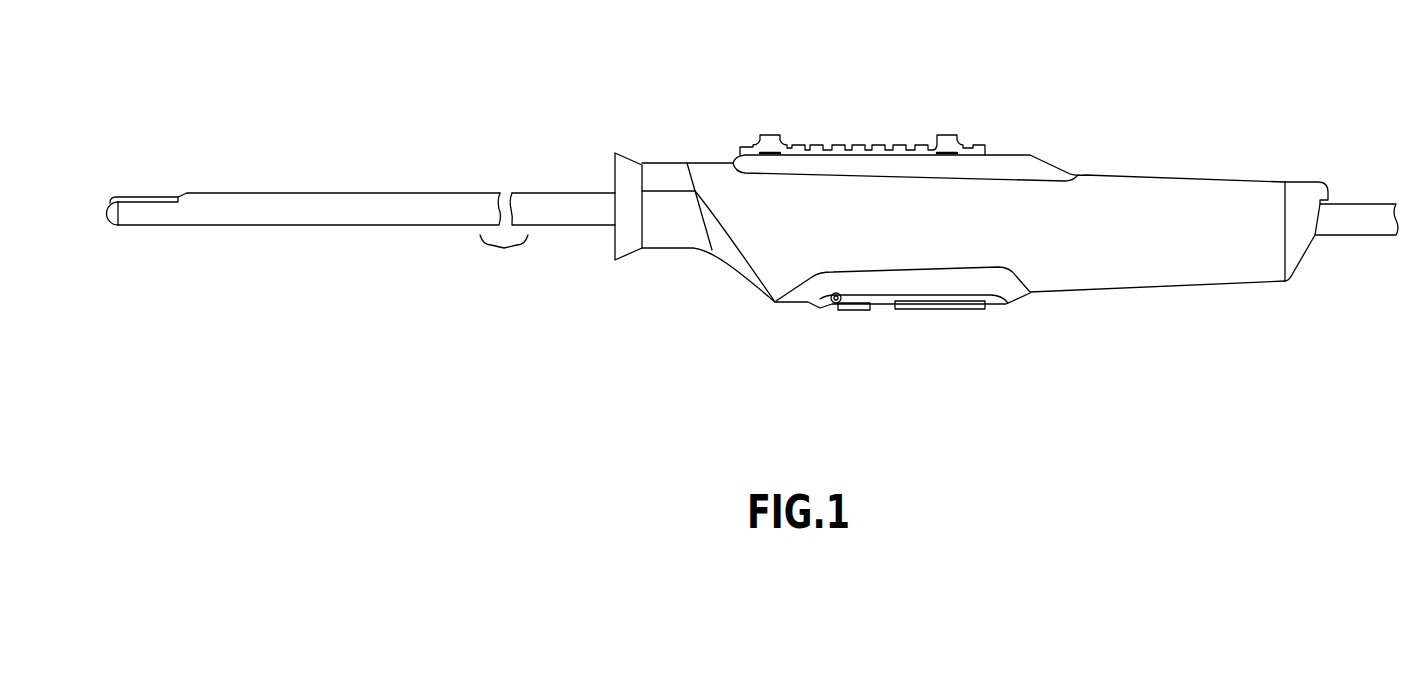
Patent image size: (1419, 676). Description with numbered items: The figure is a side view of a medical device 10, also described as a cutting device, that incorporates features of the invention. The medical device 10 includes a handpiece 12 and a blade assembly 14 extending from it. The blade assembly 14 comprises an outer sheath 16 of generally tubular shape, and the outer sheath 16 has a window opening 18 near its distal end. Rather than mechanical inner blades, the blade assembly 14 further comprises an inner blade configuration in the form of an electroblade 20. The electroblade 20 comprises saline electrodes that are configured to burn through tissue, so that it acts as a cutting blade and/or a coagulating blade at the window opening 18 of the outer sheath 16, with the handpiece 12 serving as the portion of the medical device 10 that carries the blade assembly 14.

The medical device 10 is at (753, 271).
The handpiece 12 is at (1098, 198).
The blade assembly 14 is at (361, 175).
The outer sheath 16 is at (280, 191).
The window opening 18 is at (176, 144).
The electroblade 20 is at (147, 177).